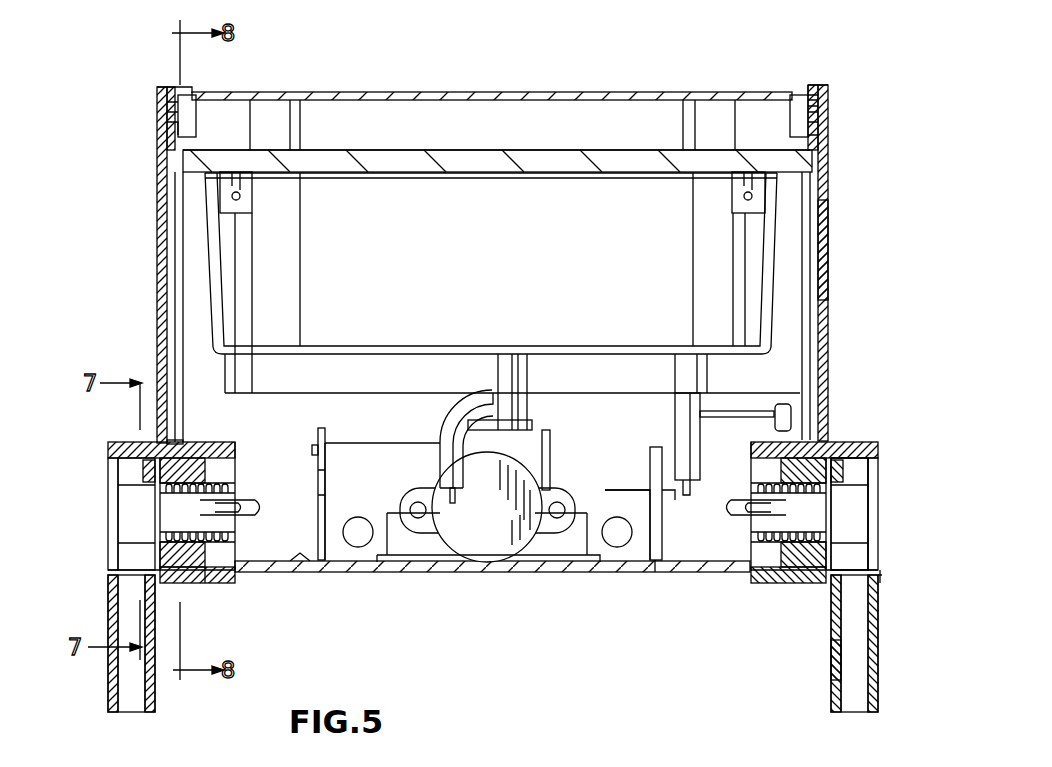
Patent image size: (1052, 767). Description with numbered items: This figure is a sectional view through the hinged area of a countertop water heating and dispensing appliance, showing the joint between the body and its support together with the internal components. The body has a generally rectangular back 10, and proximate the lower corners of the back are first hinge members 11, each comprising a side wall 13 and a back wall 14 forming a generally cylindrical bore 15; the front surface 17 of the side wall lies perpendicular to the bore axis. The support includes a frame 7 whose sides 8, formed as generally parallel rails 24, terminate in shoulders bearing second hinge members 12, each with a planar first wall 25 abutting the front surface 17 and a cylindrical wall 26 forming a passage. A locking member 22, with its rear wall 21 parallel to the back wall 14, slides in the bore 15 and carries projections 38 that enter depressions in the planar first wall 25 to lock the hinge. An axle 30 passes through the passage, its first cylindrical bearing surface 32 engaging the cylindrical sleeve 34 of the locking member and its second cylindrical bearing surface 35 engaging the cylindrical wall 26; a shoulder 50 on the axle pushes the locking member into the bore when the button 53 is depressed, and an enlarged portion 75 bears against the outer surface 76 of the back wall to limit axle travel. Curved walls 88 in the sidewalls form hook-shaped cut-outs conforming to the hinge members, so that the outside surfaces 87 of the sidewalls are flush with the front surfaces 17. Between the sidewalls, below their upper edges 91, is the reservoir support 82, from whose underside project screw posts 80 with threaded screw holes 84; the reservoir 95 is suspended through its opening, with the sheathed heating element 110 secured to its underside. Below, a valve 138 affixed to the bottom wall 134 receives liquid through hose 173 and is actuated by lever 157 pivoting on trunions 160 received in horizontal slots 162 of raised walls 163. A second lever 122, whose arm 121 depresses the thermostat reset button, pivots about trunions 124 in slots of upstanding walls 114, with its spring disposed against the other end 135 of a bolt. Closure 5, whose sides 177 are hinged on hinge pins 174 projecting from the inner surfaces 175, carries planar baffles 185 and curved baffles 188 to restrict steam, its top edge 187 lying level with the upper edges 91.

The closure 5 is at (772, 90).
The frame 7 is at (131, 643).
The sides 8 is at (882, 663).
The back 10 is at (818, 333).
The first hinge member 11 is at (748, 580).
The second hinge member 12 is at (872, 578).
The side wall 13 is at (218, 583).
The back wall 14 is at (766, 582).
The bore 15 is at (780, 600).
The front surface 17 is at (830, 586).
The locking member rear wall 21 is at (212, 583).
The locking member 22 is at (190, 465).
The rails 24 is at (836, 682).
The planar first wall 25 is at (850, 443).
The cylindrical wall 26 is at (856, 480).
The axle 30 is at (140, 505).
The first cylindrical bearing surface 32 is at (836, 498).
The cylindrical sleeve 34 is at (862, 514).
The second cylindrical bearing surface 35 is at (854, 531).
The projections 38 is at (140, 462).
The shoulder 50 is at (160, 520).
The button 53 is at (110, 564).
The enlarged portion 75 is at (742, 510).
The outer surface 76 is at (250, 538).
The screw posts 80 is at (250, 213).
The reservoir support 82 is at (332, 160).
The screw holes 84 is at (240, 196).
The outside surfaces 87 is at (828, 248).
The curved walls 88 is at (182, 440).
The upper edges 91 is at (822, 84).
The reservoir 95 is at (484, 289).
The sheathed heating element 110 is at (700, 433).
The walls 114 is at (660, 572).
The arm 121 is at (665, 455).
The lever 122 is at (612, 496).
The trunions 124 is at (672, 500).
The bottom wall 134 is at (300, 562).
The other end 135 is at (620, 546).
The valve 138 is at (447, 536).
The lever 157 is at (337, 498).
The trunions 160 is at (316, 462).
The horizontal slots 162 is at (326, 438).
The raised walls 163 is at (318, 482).
The hose 173 is at (530, 414).
The hinge pins 174 is at (820, 125).
The inner surfaces 175 is at (822, 104).
The sides 177 is at (826, 108).
The planar baffles 185 is at (790, 110).
The top edge 187 is at (806, 82).
The curved baffles 188 is at (484, 133).